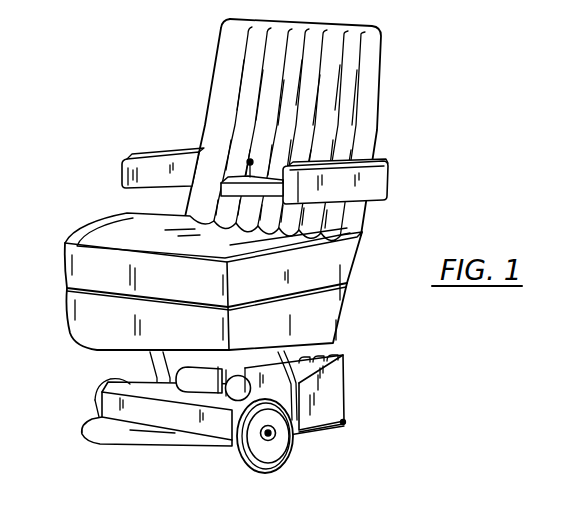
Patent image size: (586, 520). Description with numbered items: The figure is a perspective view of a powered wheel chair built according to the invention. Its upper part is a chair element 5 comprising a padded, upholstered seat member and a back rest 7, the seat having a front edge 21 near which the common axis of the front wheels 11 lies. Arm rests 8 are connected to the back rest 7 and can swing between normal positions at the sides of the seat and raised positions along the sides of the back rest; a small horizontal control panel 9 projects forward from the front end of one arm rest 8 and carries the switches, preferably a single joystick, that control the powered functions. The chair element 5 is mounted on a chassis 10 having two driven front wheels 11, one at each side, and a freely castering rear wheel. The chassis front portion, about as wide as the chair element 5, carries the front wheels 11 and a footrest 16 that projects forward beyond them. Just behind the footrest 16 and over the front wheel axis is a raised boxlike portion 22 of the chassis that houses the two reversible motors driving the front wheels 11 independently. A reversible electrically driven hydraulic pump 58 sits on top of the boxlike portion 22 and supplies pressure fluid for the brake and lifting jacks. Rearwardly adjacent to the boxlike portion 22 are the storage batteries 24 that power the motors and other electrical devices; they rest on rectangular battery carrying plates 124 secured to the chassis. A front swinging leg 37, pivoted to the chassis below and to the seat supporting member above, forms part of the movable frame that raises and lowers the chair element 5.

The chair element 5 is at (198, 76).
The back rest 7 is at (222, 37).
The arm rests 8 is at (158, 153).
The control panel 9 is at (220, 188).
The front edge 21 is at (117, 258).
The chassis 10 is at (368, 359).
The boxlike portion 22 is at (95, 392).
The footrest 16 is at (95, 420).
The hydraulic pump 58 is at (178, 369).
The storage batteries 24 is at (338, 399).
The front swinging leg 37 is at (344, 376).
The battery carrying plates 124 is at (347, 421).
The front wheels 11 is at (92, 405).